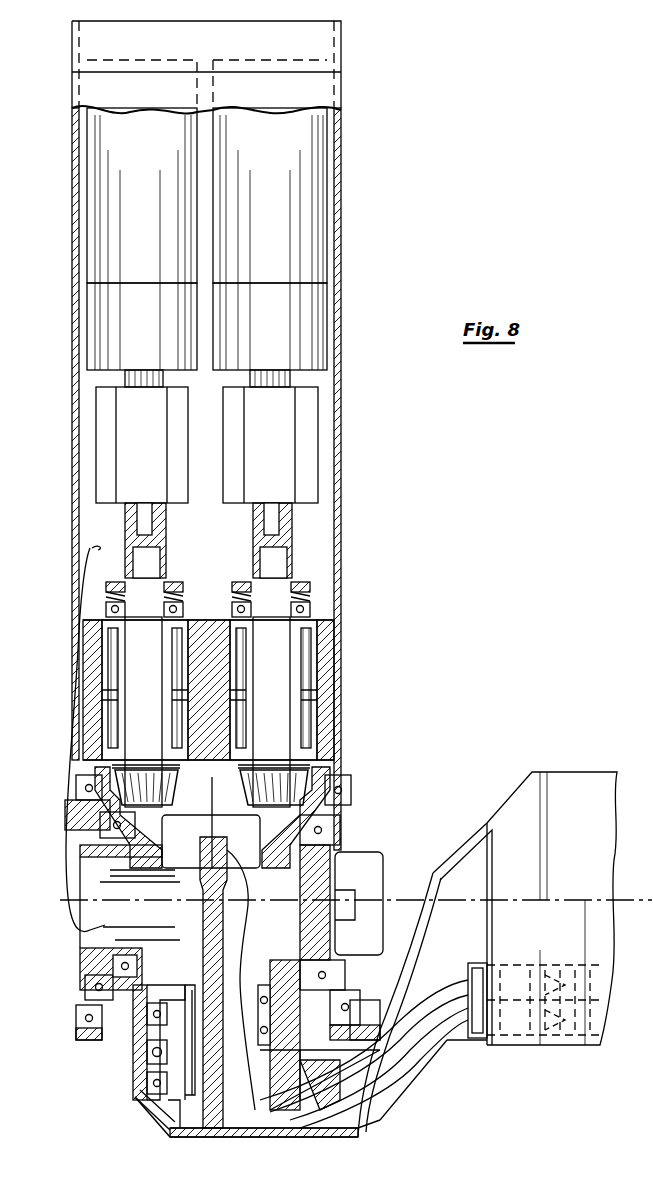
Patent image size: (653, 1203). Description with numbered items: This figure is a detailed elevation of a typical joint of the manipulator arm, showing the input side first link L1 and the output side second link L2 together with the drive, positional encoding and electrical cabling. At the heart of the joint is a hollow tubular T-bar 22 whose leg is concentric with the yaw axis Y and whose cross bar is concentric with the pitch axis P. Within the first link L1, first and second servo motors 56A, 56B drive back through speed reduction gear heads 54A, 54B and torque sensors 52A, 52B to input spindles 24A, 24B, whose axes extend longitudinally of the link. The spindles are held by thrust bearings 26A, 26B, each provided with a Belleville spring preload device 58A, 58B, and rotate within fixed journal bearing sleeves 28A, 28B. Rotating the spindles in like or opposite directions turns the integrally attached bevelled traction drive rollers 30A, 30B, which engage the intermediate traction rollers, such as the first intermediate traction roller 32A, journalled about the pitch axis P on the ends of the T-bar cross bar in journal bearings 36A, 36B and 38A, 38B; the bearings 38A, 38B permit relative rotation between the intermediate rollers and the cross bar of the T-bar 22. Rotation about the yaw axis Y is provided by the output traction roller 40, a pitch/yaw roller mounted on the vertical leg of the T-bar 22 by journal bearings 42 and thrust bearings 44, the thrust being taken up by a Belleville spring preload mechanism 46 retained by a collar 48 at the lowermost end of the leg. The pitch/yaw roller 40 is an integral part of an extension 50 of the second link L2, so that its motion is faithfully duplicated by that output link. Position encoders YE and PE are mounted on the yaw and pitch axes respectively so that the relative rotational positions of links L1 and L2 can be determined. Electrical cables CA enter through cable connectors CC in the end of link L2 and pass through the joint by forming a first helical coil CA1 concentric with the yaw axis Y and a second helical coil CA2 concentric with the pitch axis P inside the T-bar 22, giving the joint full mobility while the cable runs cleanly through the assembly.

The first servo motor 56A is at (120, 134).
The second servo motor 56B is at (285, 142).
The speed reduction gear head 54A is at (120, 322).
The speed reduction gear head 54B is at (305, 330).
The torque sensor 52A is at (125, 425).
The torque sensor 52B is at (305, 437).
The first link L1 is at (342, 484).
The input spindle 24A is at (155, 545).
The input spindle 24B is at (270, 560).
The Belleville spring preload device 58A is at (106, 594).
The Belleville spring preload device 58B is at (310, 594).
The thrust bearing 26A is at (108, 608).
The thrust bearing 26B is at (310, 608).
The journal bearing sleeve 28A is at (105, 660).
The journal bearing sleeve 28B is at (320, 668).
The bevelled traction drive roller 30A is at (113, 772).
The bevelled traction drive roller 30B is at (308, 772).
The yaw axis Y is at (212, 800).
The first position encoder YE is at (190, 854).
The second position encoder PE is at (368, 877).
The journal bearing 36A is at (78, 782).
The journal bearing 36B is at (348, 790).
The first intermediate traction roller 32A is at (72, 806).
The journal bearing 38A is at (100, 826).
The journal bearing 38B is at (340, 830).
The second helical coil CA2 is at (123, 743).
The first helical coil CA1 is at (240, 980).
The T-bar 22 is at (118, 950).
The output traction roller 40 is at (135, 1030).
The thrust bearing 44 is at (148, 1058).
The Belleville spring preload mechanism 46 is at (148, 1110).
The collar 48 is at (168, 1120).
The extension 50 is at (305, 1138).
The cables CA is at (300, 1122).
The journal bearing 42 is at (350, 1014).
The pitch axis P is at (630, 900).
The electrical cable connector CC is at (520, 1000).
The second link L2 is at (580, 1048).